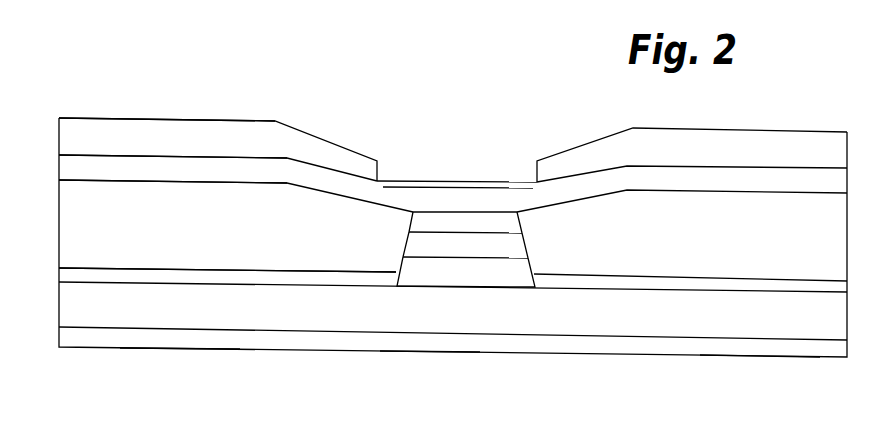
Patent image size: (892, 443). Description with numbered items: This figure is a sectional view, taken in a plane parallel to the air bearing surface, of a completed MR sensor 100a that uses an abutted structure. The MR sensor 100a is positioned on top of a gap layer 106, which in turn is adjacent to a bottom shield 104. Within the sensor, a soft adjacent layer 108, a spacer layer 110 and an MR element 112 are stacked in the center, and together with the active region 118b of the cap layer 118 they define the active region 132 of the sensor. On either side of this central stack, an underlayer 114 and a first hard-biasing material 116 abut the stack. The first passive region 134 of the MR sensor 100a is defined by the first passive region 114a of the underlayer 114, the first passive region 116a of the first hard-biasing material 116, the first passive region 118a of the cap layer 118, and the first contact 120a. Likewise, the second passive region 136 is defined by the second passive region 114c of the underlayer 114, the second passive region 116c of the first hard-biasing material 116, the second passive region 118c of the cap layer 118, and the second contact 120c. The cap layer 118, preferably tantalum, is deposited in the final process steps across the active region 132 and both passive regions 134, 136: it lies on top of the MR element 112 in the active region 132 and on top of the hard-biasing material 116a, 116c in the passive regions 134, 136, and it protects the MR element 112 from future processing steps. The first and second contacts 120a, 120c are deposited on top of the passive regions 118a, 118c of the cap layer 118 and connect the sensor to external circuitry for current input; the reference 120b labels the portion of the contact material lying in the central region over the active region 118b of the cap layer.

The MR sensor 100a is at (138, 70).
The bottom shield 104 is at (652, 345).
The gap layer 106 is at (525, 322).
The soft adjacent layer 108 is at (465, 272).
The spacer layer 110 is at (447, 243).
The MR element 112 is at (423, 223).
The underlayer 114 is at (50, 280).
The first passive region of underlayer 114a is at (267, 272).
The second passive region of underlayer 114c is at (675, 252).
The first hard-biasing material 116 is at (50, 222).
The first passive region of first hard-biasing material 116a is at (163, 242).
The second passive region of first hard-biasing material 116c is at (803, 253).
The cap layer 118 is at (55, 167).
The first passive region of cap layer 118a is at (152, 165).
The active region of cap layer 118b is at (445, 197).
The second passive region of cap layer 118c is at (787, 183).
The first contact 120a is at (114, 130).
The conductive layer trench portion 120b is at (382, 197).
The second contact 120c is at (707, 145).
The active region 132 is at (443, 358).
The first passive region 134 is at (193, 352).
The second passive region 136 is at (755, 363).